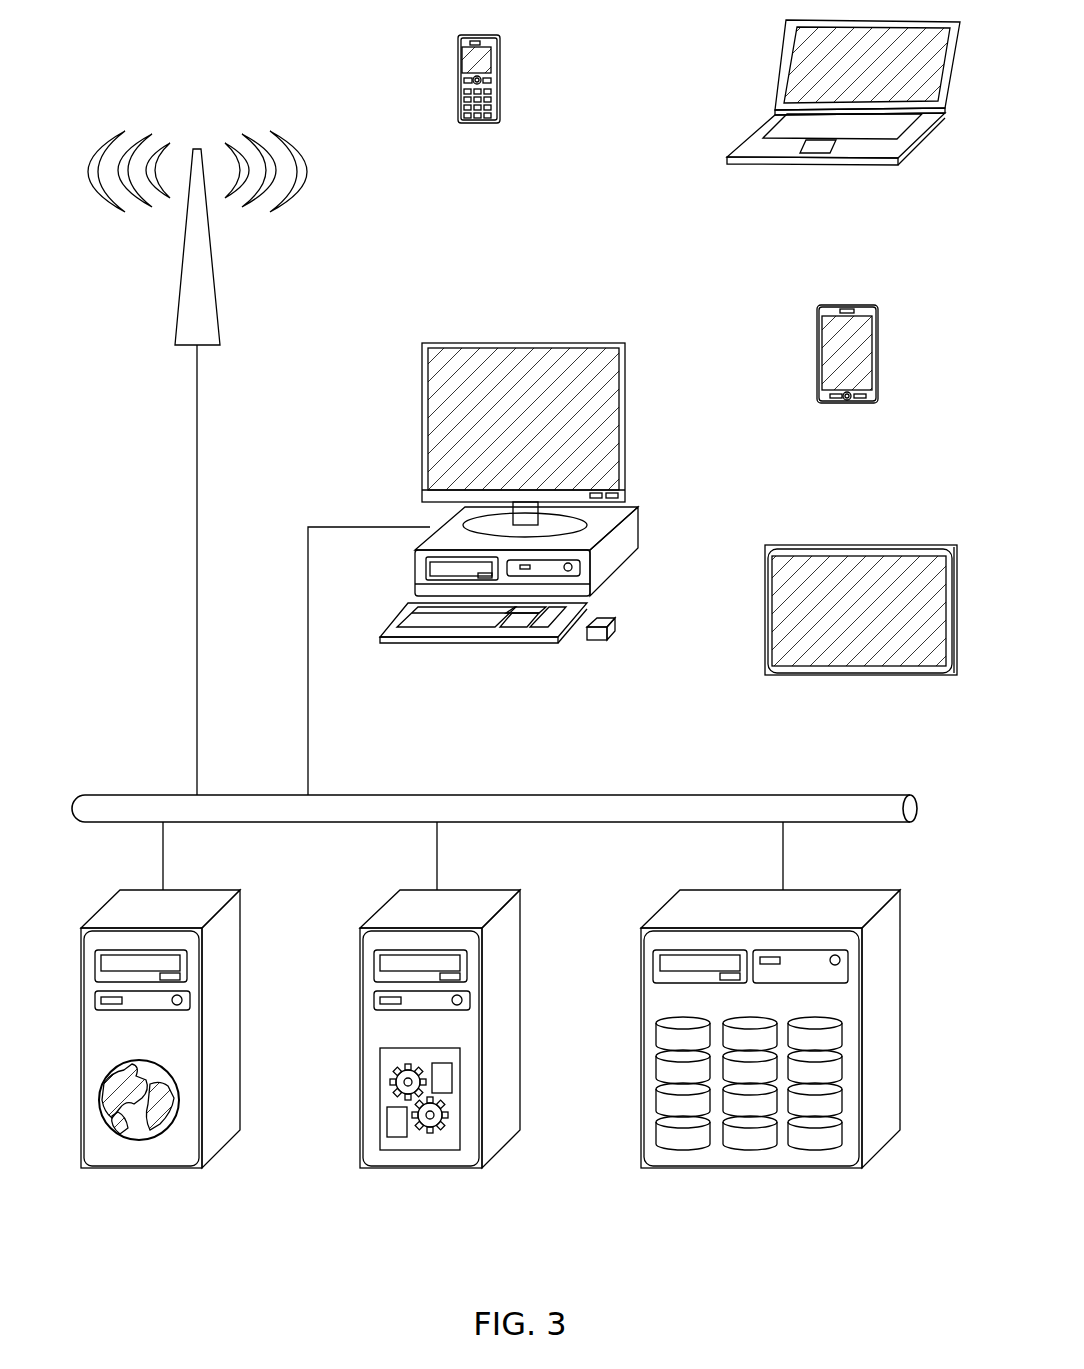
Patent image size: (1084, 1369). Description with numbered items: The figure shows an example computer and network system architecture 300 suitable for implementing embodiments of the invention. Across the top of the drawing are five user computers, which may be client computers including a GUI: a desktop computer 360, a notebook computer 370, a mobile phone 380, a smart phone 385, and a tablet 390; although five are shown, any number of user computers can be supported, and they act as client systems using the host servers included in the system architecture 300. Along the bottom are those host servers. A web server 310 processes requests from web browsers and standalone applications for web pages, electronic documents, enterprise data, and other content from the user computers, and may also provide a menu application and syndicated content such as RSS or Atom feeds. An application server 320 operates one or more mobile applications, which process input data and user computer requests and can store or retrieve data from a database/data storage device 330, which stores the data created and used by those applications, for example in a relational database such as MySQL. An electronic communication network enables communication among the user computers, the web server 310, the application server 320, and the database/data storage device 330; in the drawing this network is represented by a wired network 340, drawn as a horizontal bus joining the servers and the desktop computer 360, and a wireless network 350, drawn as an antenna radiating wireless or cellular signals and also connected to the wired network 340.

The computer and network system architecture 300 is at (150, 48).
The web server 310 is at (147, 1158).
The application server 320 is at (420, 1158).
The database/data storage device 330 is at (739, 1155).
The wired network 340 is at (494, 795).
The wireless network 350 is at (222, 245).
The desktop computer 360 is at (503, 650).
The notebook computer 370 is at (833, 173).
The mobile phone 380 is at (483, 142).
The smart phone 385 is at (853, 418).
The tablet 390 is at (857, 682).